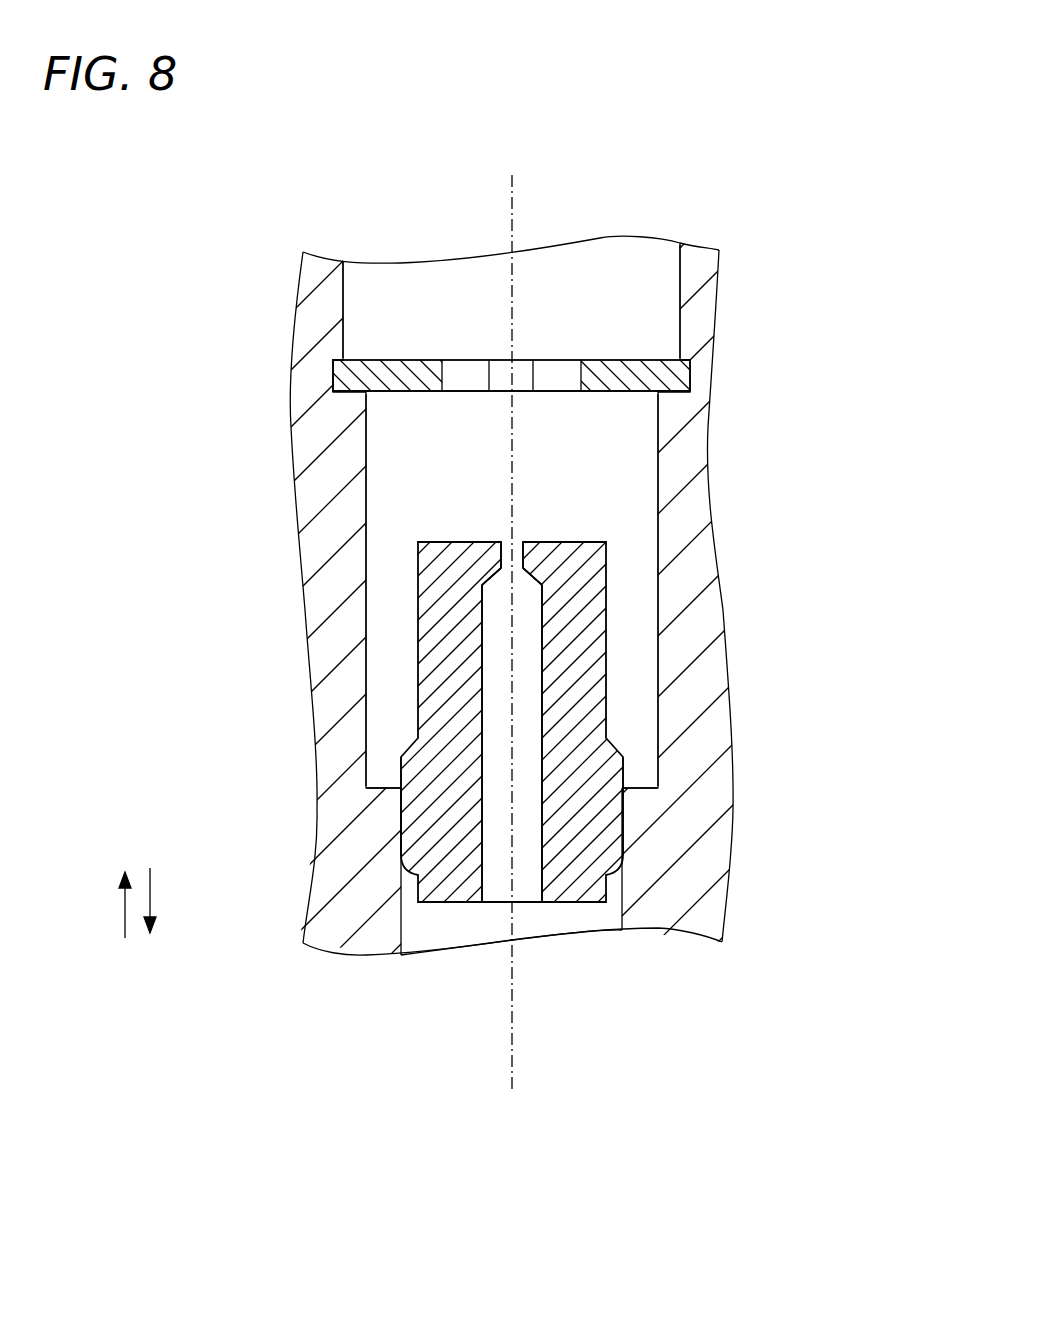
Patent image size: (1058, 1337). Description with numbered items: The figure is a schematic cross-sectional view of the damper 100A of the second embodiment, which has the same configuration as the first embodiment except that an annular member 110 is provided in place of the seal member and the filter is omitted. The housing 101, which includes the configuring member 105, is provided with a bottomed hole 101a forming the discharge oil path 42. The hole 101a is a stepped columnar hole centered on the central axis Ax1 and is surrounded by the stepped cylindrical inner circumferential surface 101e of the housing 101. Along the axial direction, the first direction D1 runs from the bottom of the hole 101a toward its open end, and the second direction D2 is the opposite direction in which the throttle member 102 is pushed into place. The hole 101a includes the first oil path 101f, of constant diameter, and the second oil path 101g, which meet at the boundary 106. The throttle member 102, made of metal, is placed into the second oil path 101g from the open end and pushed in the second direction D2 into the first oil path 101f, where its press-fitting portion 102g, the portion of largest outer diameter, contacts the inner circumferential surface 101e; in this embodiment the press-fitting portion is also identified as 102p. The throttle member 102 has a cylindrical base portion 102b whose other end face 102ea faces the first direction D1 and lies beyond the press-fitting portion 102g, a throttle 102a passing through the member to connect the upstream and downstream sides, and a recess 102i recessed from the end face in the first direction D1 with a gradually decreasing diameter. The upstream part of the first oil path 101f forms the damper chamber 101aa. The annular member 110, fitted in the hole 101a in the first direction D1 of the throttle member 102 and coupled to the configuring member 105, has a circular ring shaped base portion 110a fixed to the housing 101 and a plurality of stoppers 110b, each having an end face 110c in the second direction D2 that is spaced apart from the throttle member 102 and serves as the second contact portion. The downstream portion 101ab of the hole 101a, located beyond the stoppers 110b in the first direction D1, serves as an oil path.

The damper 100A is at (628, 188).
The housing 101 is at (718, 293).
The configuring member 105 is at (591, 677).
The downstream portion 101ab is at (652, 264).
The second oil path 101g is at (628, 490).
The inner circumferential surface 101e is at (616, 922).
The first oil path 101f is at (575, 918).
The hole 101a is at (546, 1051).
The damper chamber 101aa is at (546, 1051).
The discharge oil path 42 is at (538, 920).
The boundary 106 is at (622, 790).
The annular member 110 is at (388, 359).
The base portion 110a is at (690, 373).
The stopper 110b is at (418, 357).
The end face 110c is at (418, 393).
The throttle member 102 is at (418, 619).
The throttle 102a is at (505, 545).
The other end face 102ea is at (573, 543).
The base portion 102b is at (580, 643).
The press-fitting portion 102g is at (680, 806).
The press-fit portion 102p is at (622, 821).
The recess 102i is at (495, 890).
The central axis Ax1 is at (512, 1042).
The first direction D1 is at (120, 898).
The second direction D2 is at (153, 898).